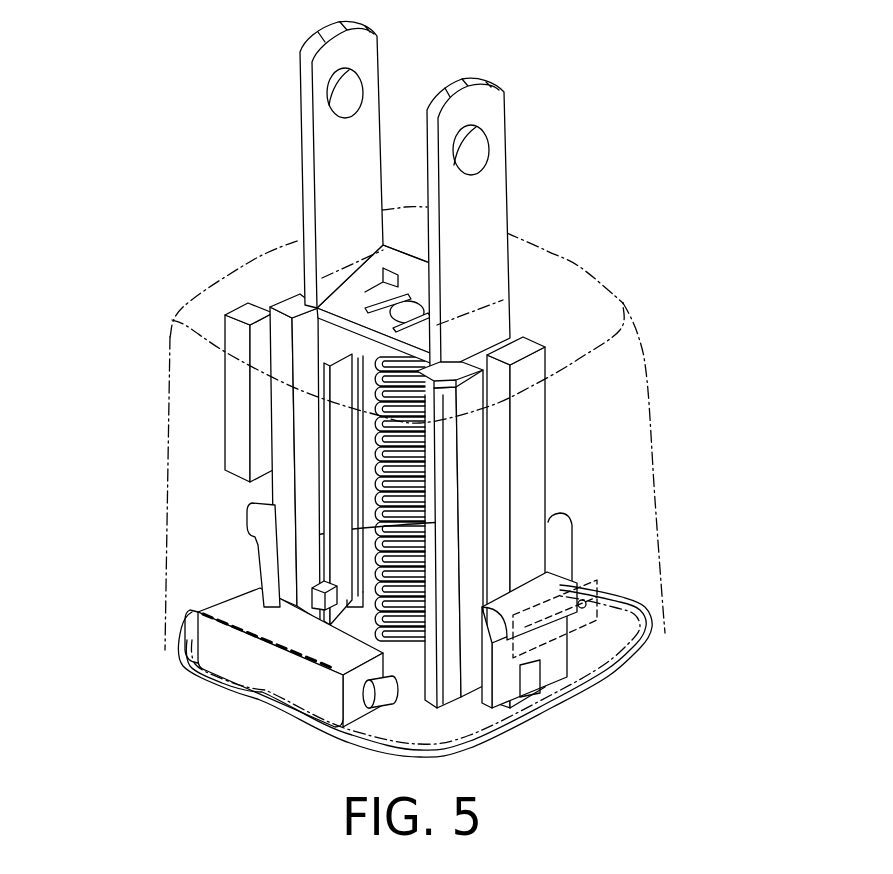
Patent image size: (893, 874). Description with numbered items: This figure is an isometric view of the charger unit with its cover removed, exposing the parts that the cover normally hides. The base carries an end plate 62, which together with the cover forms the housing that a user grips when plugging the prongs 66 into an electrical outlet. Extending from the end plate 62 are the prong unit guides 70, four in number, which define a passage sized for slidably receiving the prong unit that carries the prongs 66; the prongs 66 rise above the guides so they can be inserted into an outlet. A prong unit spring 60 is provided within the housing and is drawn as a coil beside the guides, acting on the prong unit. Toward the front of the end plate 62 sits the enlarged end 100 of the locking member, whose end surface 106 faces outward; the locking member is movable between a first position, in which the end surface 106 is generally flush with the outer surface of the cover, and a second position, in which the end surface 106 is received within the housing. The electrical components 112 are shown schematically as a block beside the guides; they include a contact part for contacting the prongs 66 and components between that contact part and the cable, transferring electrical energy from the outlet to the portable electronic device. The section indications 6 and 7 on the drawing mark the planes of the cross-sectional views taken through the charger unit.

The prong unit spring 60 is at (352, 508).
The end plate 62 is at (598, 650).
The prongs 66 is at (482, 107).
The prong unit guides 70 is at (528, 438).
The enlarged end 100 is at (238, 658).
The end surface 106 is at (252, 678).
The electrical components 112 is at (238, 418).
The section line 6- 6 is at (623, 270).
The section line 7- 7 is at (158, 358).